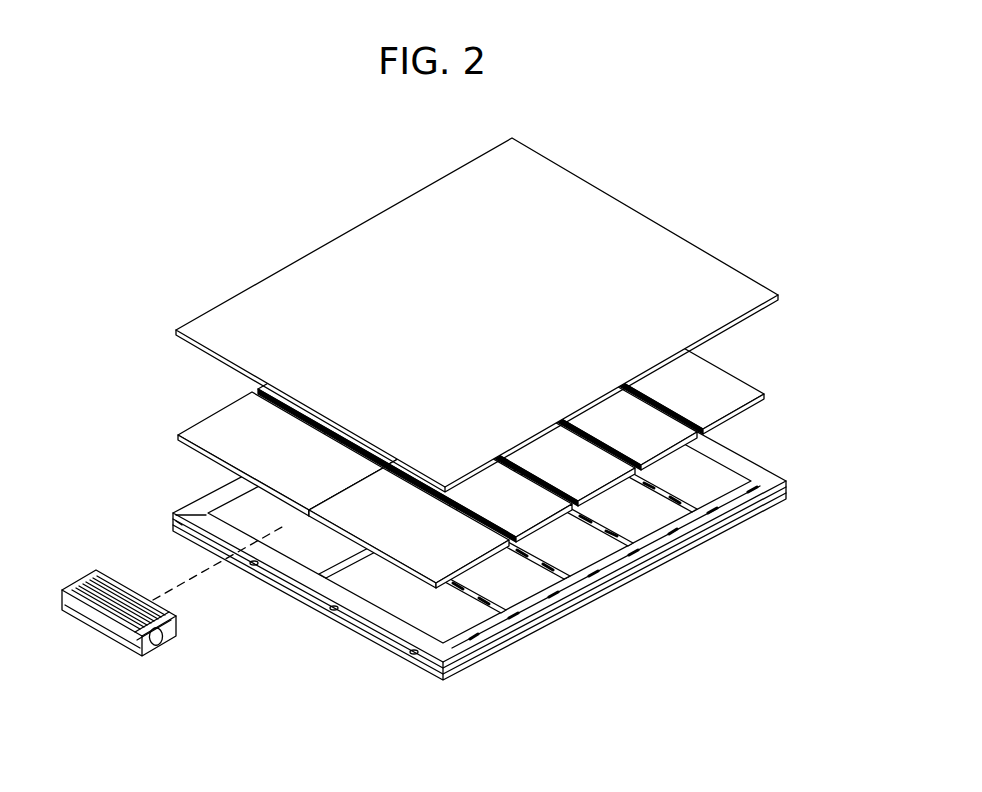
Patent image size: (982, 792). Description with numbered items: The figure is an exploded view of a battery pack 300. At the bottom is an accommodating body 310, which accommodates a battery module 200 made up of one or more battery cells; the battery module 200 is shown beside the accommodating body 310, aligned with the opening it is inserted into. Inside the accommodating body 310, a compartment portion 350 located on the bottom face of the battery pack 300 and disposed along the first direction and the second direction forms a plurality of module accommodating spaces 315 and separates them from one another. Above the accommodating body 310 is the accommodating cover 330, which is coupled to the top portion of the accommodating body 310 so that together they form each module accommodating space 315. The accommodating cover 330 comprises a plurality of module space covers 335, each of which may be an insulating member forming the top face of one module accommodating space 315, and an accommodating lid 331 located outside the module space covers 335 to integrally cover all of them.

The battery module 200 is at (84, 576).
The battery pack 300 is at (166, 165).
The accommodating body 310 is at (776, 502).
The module accommodating space 315 is at (442, 631).
The accommodating cover 330 is at (828, 343).
The accommodating lid 331 is at (702, 310).
The module space cover 335 is at (587, 467).
The compartment portion 350 is at (555, 568).